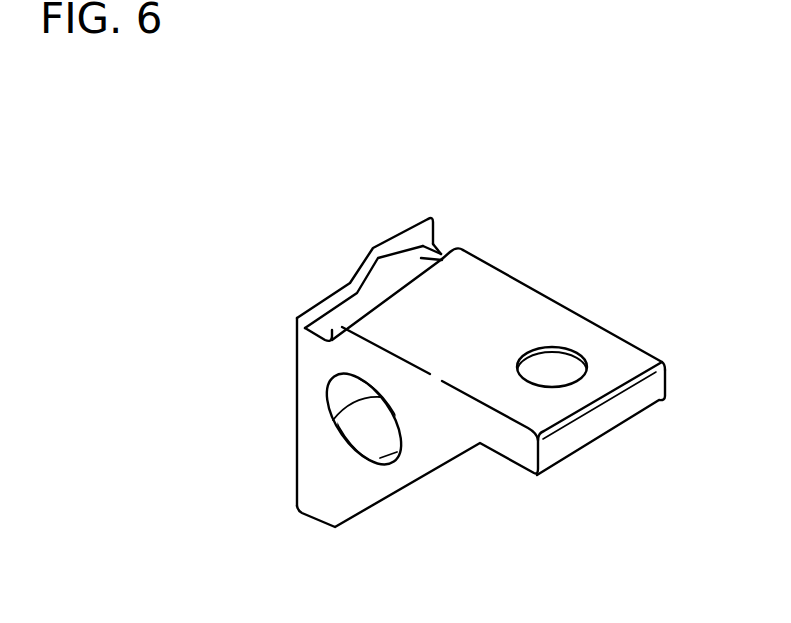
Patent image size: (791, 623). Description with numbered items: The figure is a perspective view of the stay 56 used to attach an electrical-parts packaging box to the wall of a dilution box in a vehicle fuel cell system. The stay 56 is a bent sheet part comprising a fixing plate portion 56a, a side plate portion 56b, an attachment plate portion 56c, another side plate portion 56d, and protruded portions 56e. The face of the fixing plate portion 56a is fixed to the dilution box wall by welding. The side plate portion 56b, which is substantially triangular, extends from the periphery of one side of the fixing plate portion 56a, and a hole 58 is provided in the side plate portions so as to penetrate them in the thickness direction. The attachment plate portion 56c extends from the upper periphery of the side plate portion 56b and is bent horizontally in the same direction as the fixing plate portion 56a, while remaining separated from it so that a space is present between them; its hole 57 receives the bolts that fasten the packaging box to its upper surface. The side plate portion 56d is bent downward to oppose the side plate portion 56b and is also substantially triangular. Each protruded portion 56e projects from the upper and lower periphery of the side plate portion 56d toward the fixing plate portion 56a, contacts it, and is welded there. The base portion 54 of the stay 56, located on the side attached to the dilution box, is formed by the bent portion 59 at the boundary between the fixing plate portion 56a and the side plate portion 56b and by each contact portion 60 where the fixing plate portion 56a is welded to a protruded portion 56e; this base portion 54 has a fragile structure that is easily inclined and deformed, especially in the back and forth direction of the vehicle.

The stay 56 is at (268, 186).
The fixing plate portion 56a is at (359, 271).
The side plate portion 56b is at (355, 483).
The attachment plate portion 56c is at (535, 308).
The side plate portion 56d is at (648, 383).
The protruded portion 56e is at (418, 244).
The hole 57 is at (565, 378).
The hole 58 is at (333, 421).
The bent portion 59 is at (296, 364).
The contact portion 60 is at (423, 246).
The base portion 54 is at (450, 236).